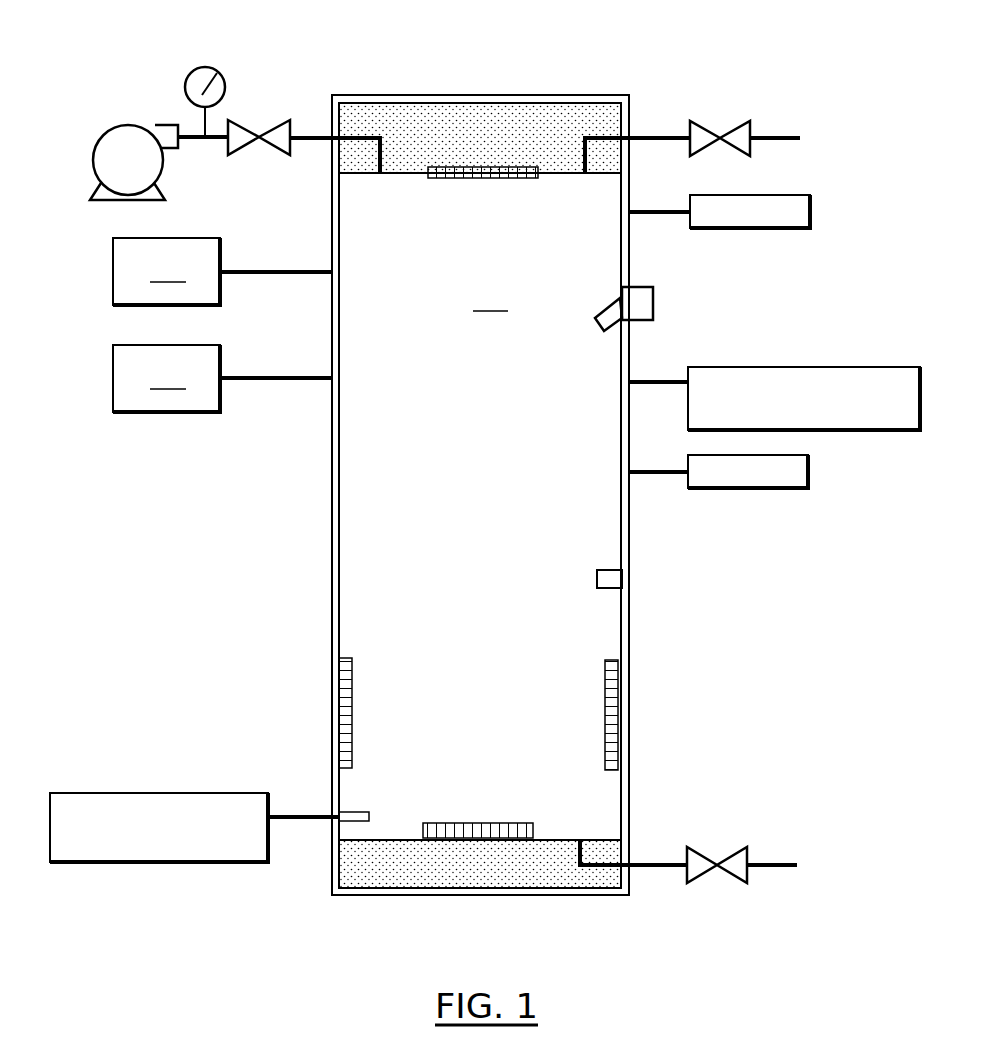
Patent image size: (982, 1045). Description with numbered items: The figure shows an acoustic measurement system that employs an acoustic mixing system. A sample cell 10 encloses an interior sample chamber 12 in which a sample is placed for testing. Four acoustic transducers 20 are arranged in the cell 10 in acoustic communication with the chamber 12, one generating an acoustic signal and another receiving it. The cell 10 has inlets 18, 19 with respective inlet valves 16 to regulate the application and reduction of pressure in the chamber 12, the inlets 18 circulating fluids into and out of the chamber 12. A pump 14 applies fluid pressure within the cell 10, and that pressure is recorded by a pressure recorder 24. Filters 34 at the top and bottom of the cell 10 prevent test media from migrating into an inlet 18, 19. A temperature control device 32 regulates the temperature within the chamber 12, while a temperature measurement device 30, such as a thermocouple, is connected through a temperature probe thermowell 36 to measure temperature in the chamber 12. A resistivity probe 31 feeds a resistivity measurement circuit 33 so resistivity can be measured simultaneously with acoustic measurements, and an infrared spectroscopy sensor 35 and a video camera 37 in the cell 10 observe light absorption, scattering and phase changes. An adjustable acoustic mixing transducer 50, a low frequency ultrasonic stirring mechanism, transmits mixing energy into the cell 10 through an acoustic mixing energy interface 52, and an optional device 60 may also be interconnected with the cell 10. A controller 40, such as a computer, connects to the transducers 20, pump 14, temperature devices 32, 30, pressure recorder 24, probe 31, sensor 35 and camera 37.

The sample cell 10 is at (332, 782).
The interior sample chamber 12 is at (480, 495).
The pump 14 is at (128, 140).
The inlet valve 16 is at (247, 132).
The inlet 18 is at (648, 138).
The inlet 19 is at (312, 140).
The acoustic transducer 20 is at (500, 178).
The pressure recorder 24 is at (205, 68).
The temperature measurement device 30 is at (745, 367).
The resistivity probe 31 is at (360, 808).
The temperature control device 32 is at (222, 271).
The resistivity measurement circuit 33 is at (205, 793).
The filter 34 is at (455, 118).
The infrared spectroscopy sensor 35 is at (610, 582).
The temperature probe thermowell 36 is at (655, 378).
The video camera 37 is at (648, 292).
The controller 40 is at (222, 378).
The acoustic mixing transducer 50 is at (748, 490).
The acoustic mixing energy interface 52 is at (650, 476).
The optional device 60 is at (762, 230).